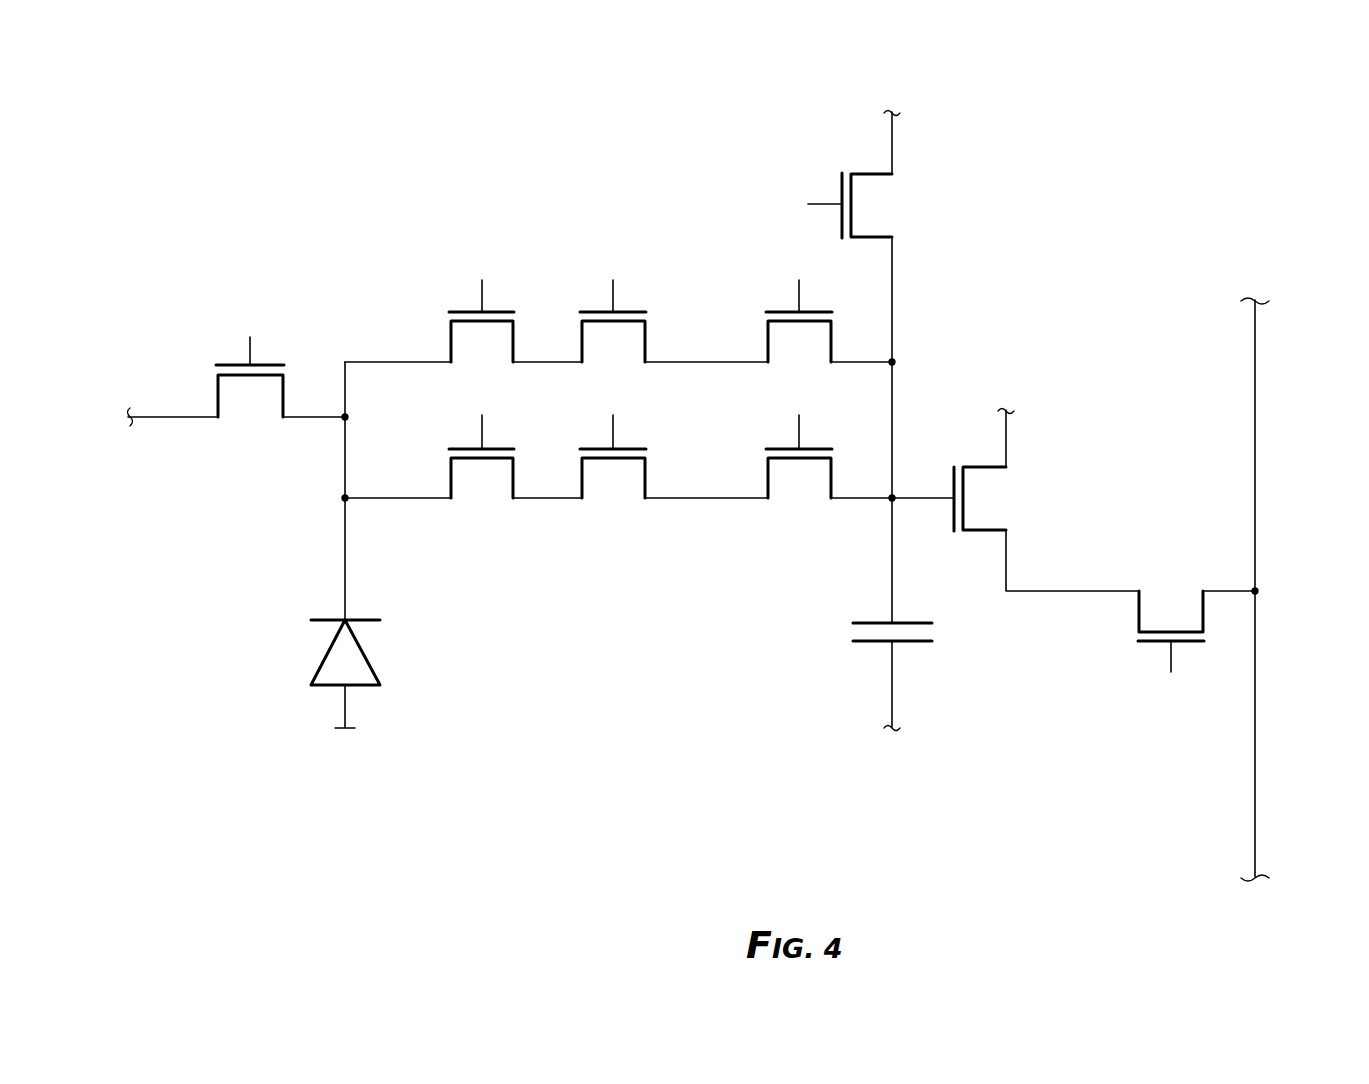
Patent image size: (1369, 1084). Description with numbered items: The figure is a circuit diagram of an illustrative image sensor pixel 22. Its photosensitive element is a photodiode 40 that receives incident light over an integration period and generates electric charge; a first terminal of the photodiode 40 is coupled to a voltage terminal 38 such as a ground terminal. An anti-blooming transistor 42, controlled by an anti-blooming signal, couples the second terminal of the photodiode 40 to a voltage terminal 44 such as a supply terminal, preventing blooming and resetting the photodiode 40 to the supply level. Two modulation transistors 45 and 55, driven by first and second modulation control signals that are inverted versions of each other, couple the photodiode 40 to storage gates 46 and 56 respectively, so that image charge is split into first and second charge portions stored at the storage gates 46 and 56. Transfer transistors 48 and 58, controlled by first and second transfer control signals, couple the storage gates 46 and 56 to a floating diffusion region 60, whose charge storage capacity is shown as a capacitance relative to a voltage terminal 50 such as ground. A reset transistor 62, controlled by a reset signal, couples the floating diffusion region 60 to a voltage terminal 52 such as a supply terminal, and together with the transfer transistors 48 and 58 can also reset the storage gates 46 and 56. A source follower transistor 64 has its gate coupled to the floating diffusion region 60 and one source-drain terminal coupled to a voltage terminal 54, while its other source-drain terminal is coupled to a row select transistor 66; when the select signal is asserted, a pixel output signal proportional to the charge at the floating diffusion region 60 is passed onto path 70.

The image sensor pixel 22 is at (1216, 112).
The voltage terminal 38 is at (348, 734).
The photodiode 40 is at (300, 688).
The anti-blooming transistor 42 is at (248, 419).
The voltage terminal 44 is at (123, 418).
The transistor 45 is at (437, 340).
The storage gate 46 is at (657, 324).
The transfer transistor 48 is at (752, 333).
The voltage terminal 50 is at (888, 733).
The voltage terminal 52 is at (896, 104).
The voltage terminal 54 is at (1015, 395).
The transistor 55 is at (485, 493).
The storage gate 56 is at (619, 490).
The transfer transistor 58 is at (793, 487).
The floating diffusion region 60 is at (880, 517).
The reset transistor 62 is at (883, 205).
The source follower transistor 64 is at (1005, 493).
The row select transistor 66 is at (1162, 578).
The path 70 is at (1255, 713).